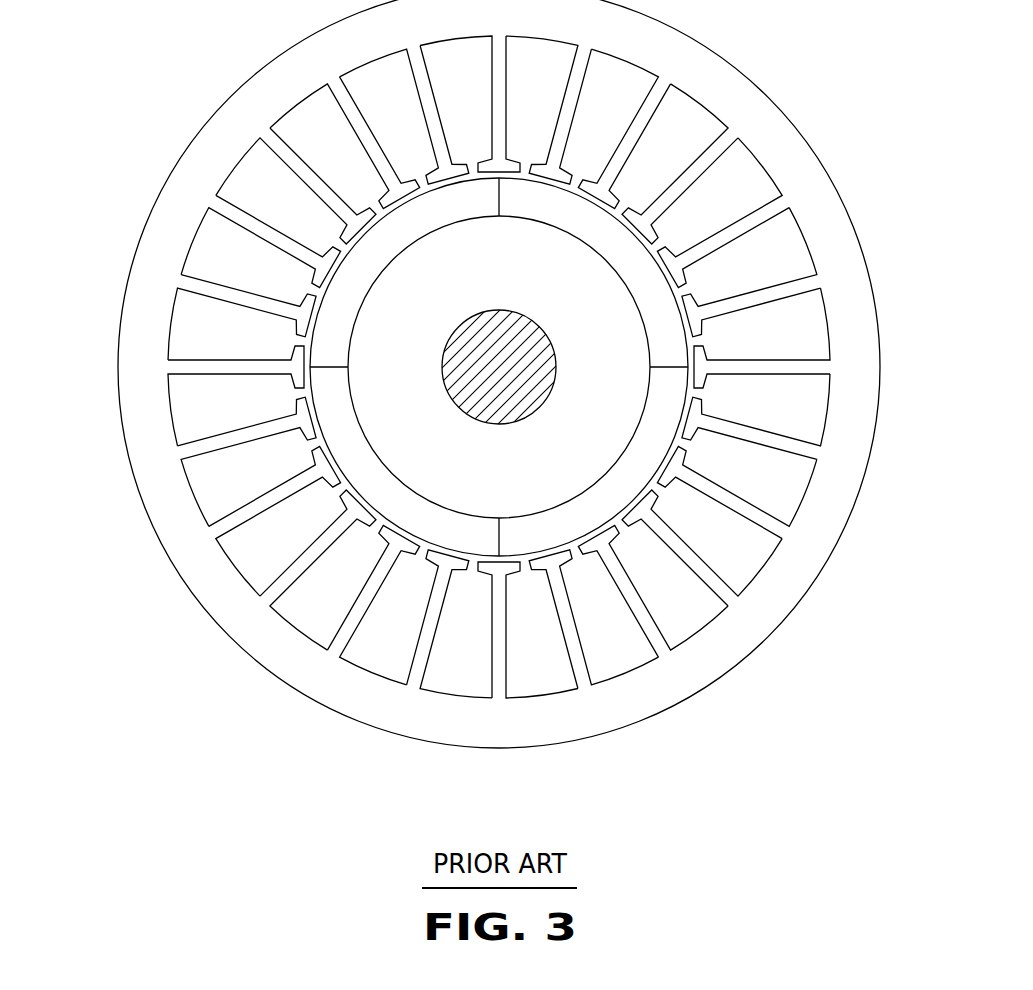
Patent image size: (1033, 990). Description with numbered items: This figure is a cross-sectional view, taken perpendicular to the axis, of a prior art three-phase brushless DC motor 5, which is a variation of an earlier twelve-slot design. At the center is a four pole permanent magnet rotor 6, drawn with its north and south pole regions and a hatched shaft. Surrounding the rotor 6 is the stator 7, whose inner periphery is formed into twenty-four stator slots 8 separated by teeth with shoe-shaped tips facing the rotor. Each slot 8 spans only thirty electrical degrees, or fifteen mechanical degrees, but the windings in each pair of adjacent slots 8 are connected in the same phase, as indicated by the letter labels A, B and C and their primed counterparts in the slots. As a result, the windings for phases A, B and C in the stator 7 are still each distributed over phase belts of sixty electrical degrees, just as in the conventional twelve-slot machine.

The motor 5 is at (163, 73).
The four pole rotor 6 is at (522, 246).
The stator 7 is at (767, 145).
The stator slots 8 is at (248, 152).